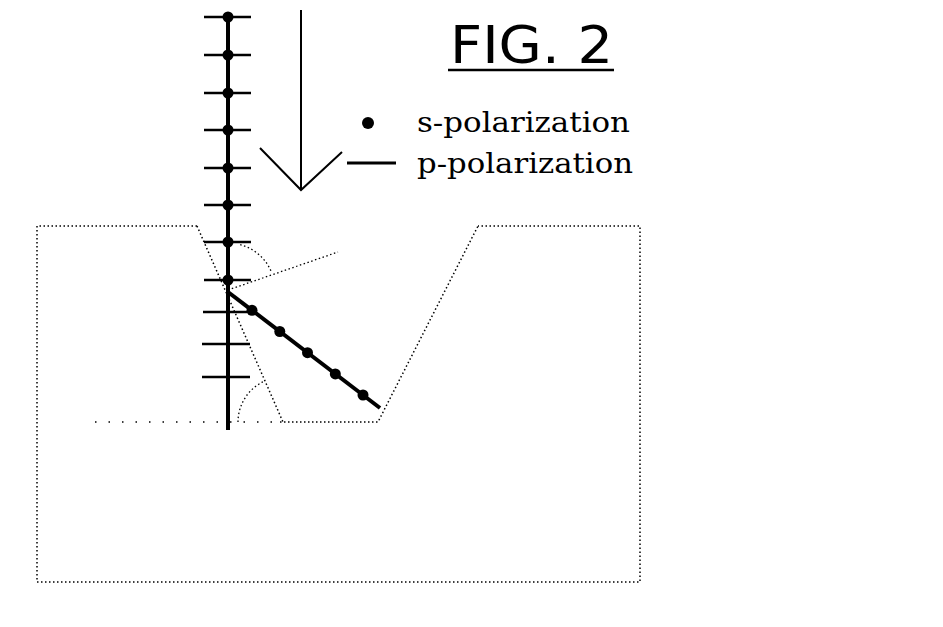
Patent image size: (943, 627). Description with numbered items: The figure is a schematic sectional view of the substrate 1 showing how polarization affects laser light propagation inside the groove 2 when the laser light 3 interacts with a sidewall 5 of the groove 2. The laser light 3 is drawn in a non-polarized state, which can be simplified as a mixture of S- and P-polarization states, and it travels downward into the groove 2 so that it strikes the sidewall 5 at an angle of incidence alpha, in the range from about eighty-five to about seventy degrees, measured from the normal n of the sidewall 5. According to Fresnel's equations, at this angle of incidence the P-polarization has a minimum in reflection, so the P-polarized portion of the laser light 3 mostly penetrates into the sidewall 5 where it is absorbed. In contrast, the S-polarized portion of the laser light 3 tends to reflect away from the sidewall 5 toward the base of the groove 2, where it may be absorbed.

The substrate 1 is at (587, 465).
The groove 2 is at (370, 302).
The laser light 3 is at (305, 55).
The sidewall 5 is at (208, 255).